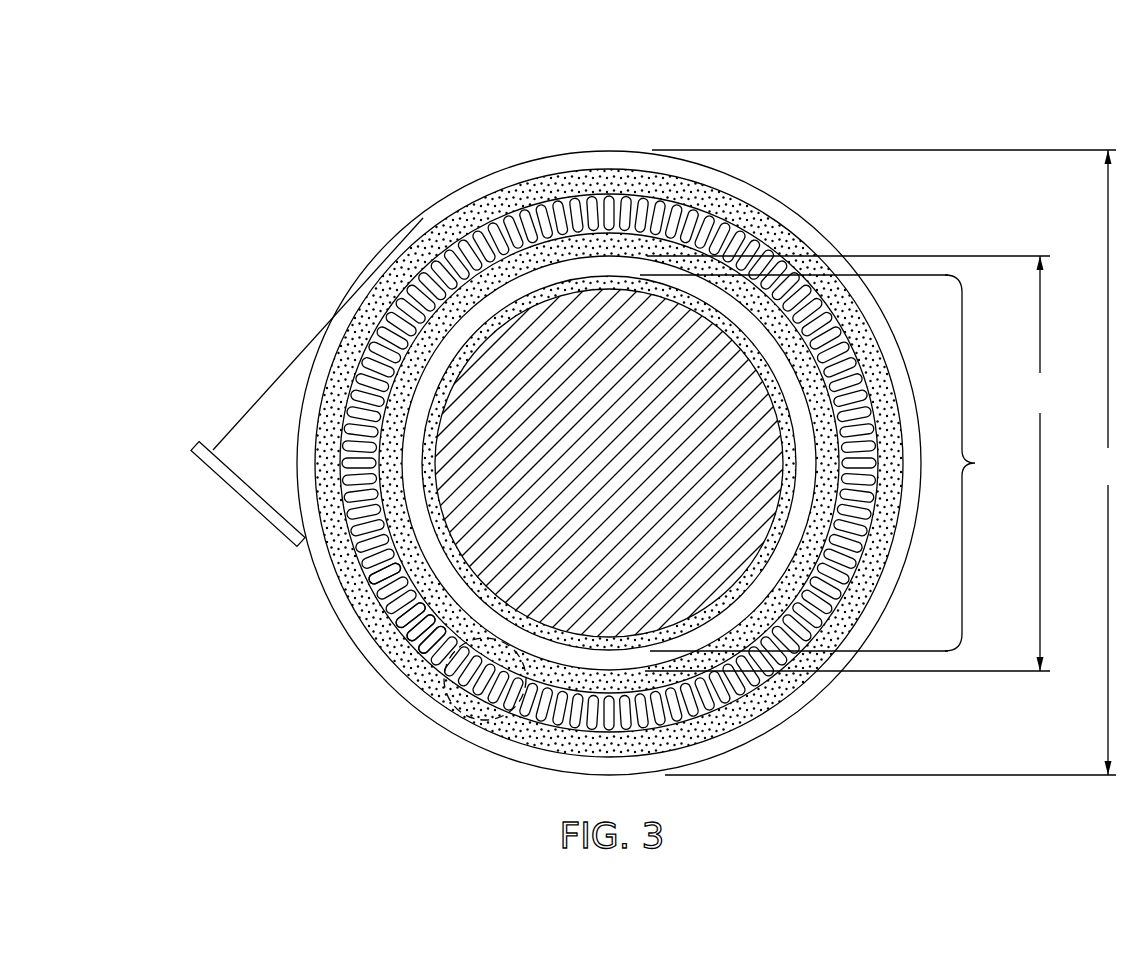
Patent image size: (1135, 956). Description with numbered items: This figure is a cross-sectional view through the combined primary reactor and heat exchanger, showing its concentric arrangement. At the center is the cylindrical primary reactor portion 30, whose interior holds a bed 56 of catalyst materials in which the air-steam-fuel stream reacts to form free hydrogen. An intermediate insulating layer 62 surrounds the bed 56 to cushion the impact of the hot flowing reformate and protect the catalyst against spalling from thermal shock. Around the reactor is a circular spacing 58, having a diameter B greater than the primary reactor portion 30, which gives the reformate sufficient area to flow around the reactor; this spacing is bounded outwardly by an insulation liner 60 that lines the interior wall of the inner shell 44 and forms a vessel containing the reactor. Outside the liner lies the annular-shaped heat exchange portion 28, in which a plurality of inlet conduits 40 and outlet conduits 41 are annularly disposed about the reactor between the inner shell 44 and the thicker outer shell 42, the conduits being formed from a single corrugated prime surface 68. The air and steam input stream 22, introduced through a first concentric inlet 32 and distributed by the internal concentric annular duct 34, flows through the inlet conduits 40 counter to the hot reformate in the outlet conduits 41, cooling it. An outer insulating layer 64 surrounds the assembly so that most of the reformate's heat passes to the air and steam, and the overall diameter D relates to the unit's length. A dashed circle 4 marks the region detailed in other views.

The detail view circle (FIG. 4) 4 is at (460, 713).
The air and steam input stream 22 is at (288, 391).
The heat exchange portion 28 is at (628, 82).
The primary reactor portion 30 is at (828, 463).
The first concentric inlet 32 is at (232, 428).
The internal concentric annular duct 34 is at (337, 320).
The inlet conduits 40 is at (430, 645).
The outlet conduits 41 is at (392, 619).
The outer concentric cylindrical shell 42 is at (602, 184).
The inner concentric cylindrical shell 44 is at (590, 220).
The bed of catalyst materials 56 is at (597, 479).
The circular spacing 58 is at (446, 367).
The insulation liner 60 is at (398, 268).
The intermediate insulating layer 62 is at (488, 221).
The outer insulating layer 64 is at (447, 244).
The prime surface 68 is at (563, 203).
The diameter of circular spacing B is at (847, 463).
The diameter D is at (884, 462).